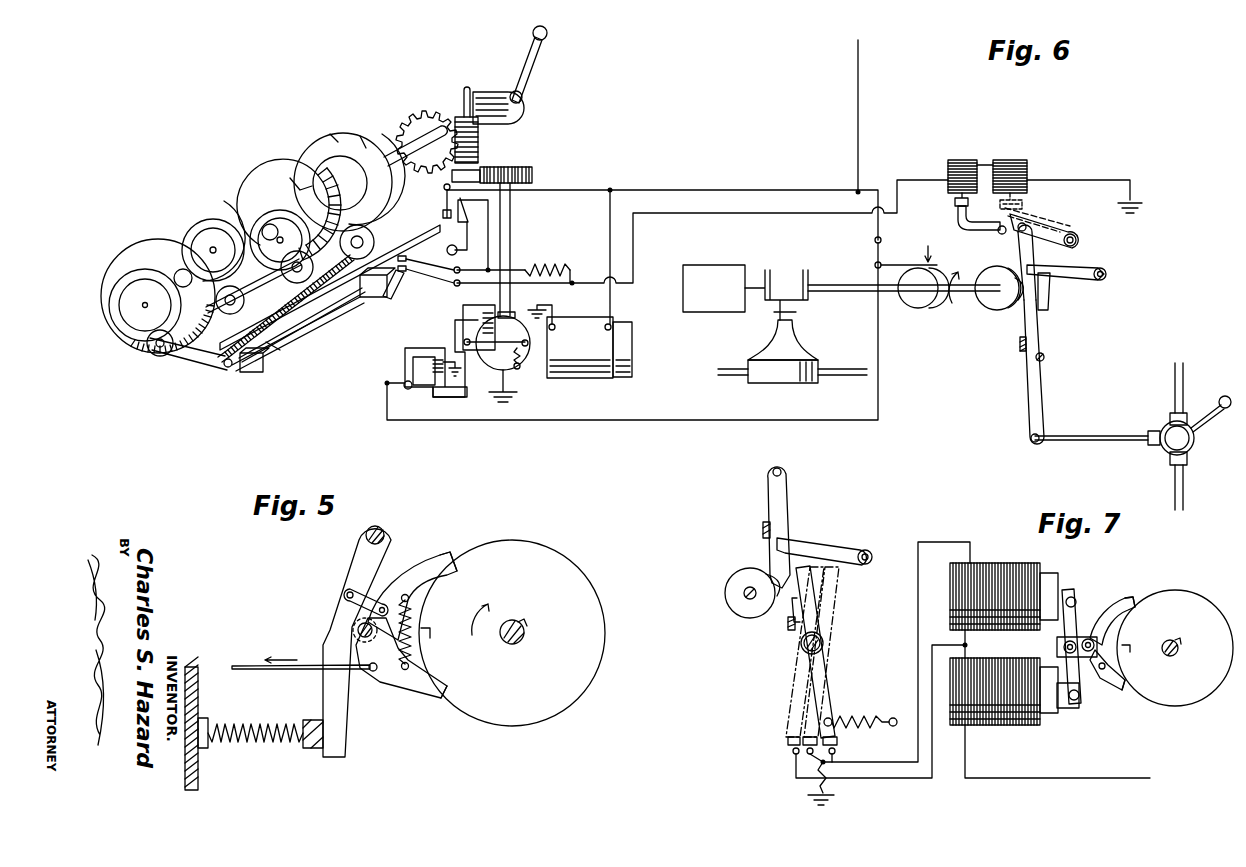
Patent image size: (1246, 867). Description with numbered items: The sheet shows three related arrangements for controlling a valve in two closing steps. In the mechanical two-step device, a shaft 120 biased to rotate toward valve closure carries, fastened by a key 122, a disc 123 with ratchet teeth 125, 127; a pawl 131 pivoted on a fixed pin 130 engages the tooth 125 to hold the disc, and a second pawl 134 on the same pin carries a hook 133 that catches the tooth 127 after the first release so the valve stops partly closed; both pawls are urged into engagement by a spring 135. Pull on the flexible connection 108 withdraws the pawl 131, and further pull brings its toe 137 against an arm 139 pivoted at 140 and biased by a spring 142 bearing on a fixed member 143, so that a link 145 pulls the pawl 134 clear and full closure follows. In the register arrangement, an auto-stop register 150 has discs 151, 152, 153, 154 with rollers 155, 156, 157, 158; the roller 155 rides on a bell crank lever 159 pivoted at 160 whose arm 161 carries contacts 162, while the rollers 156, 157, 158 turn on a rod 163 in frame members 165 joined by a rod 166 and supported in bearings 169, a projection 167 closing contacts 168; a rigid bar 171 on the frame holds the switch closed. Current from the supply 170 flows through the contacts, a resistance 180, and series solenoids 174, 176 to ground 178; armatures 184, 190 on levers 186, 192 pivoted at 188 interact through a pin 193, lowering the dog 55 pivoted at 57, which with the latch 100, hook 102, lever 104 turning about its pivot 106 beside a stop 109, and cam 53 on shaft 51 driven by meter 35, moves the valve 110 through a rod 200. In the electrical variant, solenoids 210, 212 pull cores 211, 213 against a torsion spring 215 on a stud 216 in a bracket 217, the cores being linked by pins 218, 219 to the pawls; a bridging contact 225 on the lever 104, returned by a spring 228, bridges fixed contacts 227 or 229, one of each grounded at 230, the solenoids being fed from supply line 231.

In FIG. 6, the meter 35 is at (760, 385).
In FIG. 6, the shaft 51 is at (937, 305).
In FIG. 6, the cam 53 is at (995, 312).
In FIG. 7, the cam 53 is at (740, 613).
In FIG. 6, the dog 55 is at (1035, 263).
In FIG. 7, the dog 55 is at (783, 498).
In FIG. 6, the pivot 57 is at (1020, 233).
In FIG. 7, the pivot 57 is at (782, 472).
In FIG. 6, the latch 100 is at (1082, 280).
In FIG. 7, the latch 100 is at (824, 551).
In FIG. 6, the hook 102 is at (1050, 300).
In FIG. 6, the lever 104 is at (1046, 338).
In FIG. 7, the lever 104 is at (820, 663).
In FIG. 6, the pivot 106 is at (1046, 357).
In FIG. 7, the pivot 106 is at (822, 643).
In FIG. 5, the flexible connection 108 is at (240, 665).
In FIG. 6, the stop 109 is at (1018, 347).
In FIG. 7, the stop 109 is at (779, 576).
In FIG. 6, the valve 110 is at (1165, 448).
In FIG. 5, the shaft 120 is at (521, 645).
In FIG. 7, the shaft 120 is at (1172, 657).
In FIG. 5, the key 122 is at (525, 625).
In FIG. 7, the key 122 is at (1175, 642).
In FIG. 5, the disc 123 is at (555, 557).
In FIG. 7, the disc 123 is at (1177, 715).
In FIG. 5, the ratchet tooth 125 is at (447, 702).
In FIG. 7, the ratchet tooth 125 is at (1122, 701).
In FIG. 5, the ratchet tooth 127 is at (428, 626).
In FIG. 7, the ratchet tooth 127 is at (1108, 655).
In FIG. 5, the fixed pin 130 is at (357, 630).
In FIG. 7, the fixed pin 130 is at (1095, 643).
In FIG. 5, the pawl 131 is at (405, 690).
In FIG. 7, the pawl 131 is at (1103, 700).
In FIG. 5, the hook 133 is at (458, 553).
In FIG. 7, the hook 133 is at (1131, 603).
In FIG. 5, the pawl 134 is at (410, 562).
In FIG. 7, the pawl 134 is at (1108, 598).
In FIG. 5, the spring 135 is at (412, 642).
In FIG. 5, the toe 137 is at (372, 675).
In FIG. 5, the arm 139 is at (348, 720).
In FIG. 5, the pivot 140 is at (378, 527).
In FIG. 5, the spring 142 is at (255, 746).
In FIG. 5, the fixed member 143 is at (200, 712).
In FIG. 5, the link 145 is at (345, 597).
In FIG. 6, the auto-stop register 150 is at (227, 190).
In FIG. 6, the disc 151 is at (350, 140).
In FIG. 6, the disc 152 is at (268, 178).
In FIG. 6, the disc 153 is at (195, 237).
In FIG. 6, the disc 154 is at (122, 276).
In FIG. 6, the roller 155 is at (355, 259).
In FIG. 6, the roller 156 is at (300, 291).
In FIG. 6, the roller 157 is at (226, 316).
In FIG. 6, the roller 158 is at (163, 358).
In FIG. 6, the bell crank lever 159 is at (415, 236).
In FIG. 6, the pivot 160 is at (458, 250).
In FIG. 6, the arm 161 is at (465, 225).
In FIG. 6, the electrical contacts 162 is at (444, 190).
In FIG. 6, the rod 163 is at (275, 352).
In FIG. 6, the frame members 165 is at (327, 293).
In FIG. 6, the rod 166 is at (273, 350).
In FIG. 6, the projection 167 is at (407, 283).
In FIG. 6, the contacts 168 is at (412, 269).
In FIG. 6, the bearings 169 is at (250, 376).
In FIG. 6, the supply 170 is at (858, 100).
In FIG. 6, the rigid bar 171 is at (250, 318).
In FIG. 6, the solenoid 174 is at (948, 165).
In FIG. 6, the solenoid 176 is at (1027, 168).
In FIG. 6, the ground 178 is at (1140, 205).
In FIG. 6, the resistance 180 is at (552, 266).
In FIG. 6, the armature 184 is at (953, 202).
In FIG. 6, the lever 186 is at (958, 218).
In FIG. 6, the pivot 188 is at (1080, 240).
In FIG. 6, the armature 190 is at (1025, 207).
In FIG. 6, the lever 192 is at (1048, 223).
In FIG. 6, the pin 193 is at (998, 232).
In FIG. 6, the rod 200 is at (1088, 435).
In FIG. 7, the solenoid 210 is at (985, 727).
In FIG. 7, the movable core 211 is at (1060, 713).
In FIG. 7, the solenoid 212 is at (1015, 553).
In FIG. 7, the movable core 213 is at (1065, 590).
In FIG. 7, the torsion spring 215 is at (1063, 646).
In FIG. 7, the stud 216 is at (1105, 668).
In FIG. 7, the fixed bracket 217 is at (1055, 652).
In FIG. 7, the pin 218 is at (1075, 706).
In FIG. 7, the pin 219 is at (1080, 600).
In FIG. 7, the bridging contact 225 is at (838, 742).
In FIG. 7, the fixed contacts 227 is at (858, 766).
In FIG. 7, the spring 228 is at (858, 716).
In FIG. 7, the fixed contacts 229 is at (800, 752).
In FIG. 7, the ground 230 is at (808, 797).
In FIG. 7, the supply line 231 is at (994, 781).